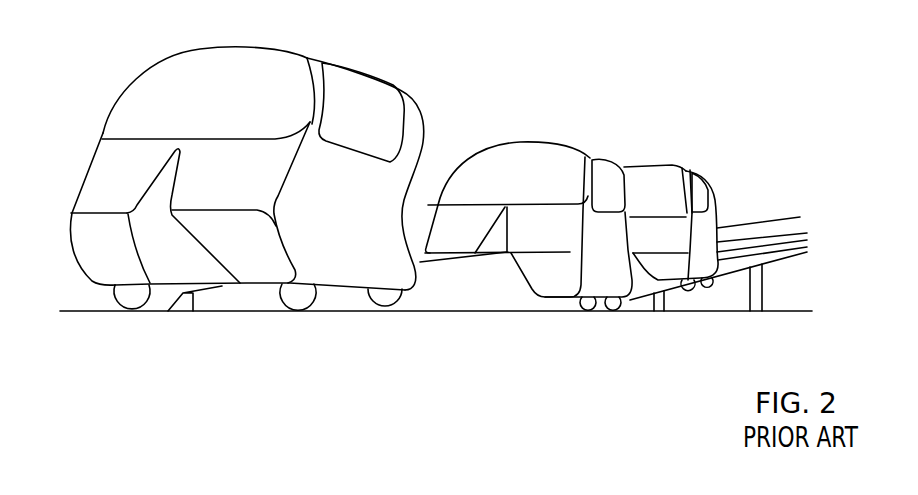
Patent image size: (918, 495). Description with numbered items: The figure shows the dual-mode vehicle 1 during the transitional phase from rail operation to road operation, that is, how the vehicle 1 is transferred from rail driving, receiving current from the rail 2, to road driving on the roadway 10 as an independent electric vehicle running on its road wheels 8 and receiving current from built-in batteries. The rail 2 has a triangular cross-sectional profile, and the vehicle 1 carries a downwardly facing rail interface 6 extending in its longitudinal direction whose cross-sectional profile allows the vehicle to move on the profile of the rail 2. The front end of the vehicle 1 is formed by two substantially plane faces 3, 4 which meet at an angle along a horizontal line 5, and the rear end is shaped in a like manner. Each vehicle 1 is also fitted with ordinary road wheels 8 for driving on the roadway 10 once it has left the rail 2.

The vehicle 1 is at (337, 80).
The rail 2 is at (762, 233).
The plane face 3 is at (240, 180).
The plane face 4 is at (255, 260).
The horizontal line 5 is at (192, 213).
The rail interface 6 is at (157, 243).
The road wheels 8 is at (297, 295).
The roadway 10 is at (93, 311).